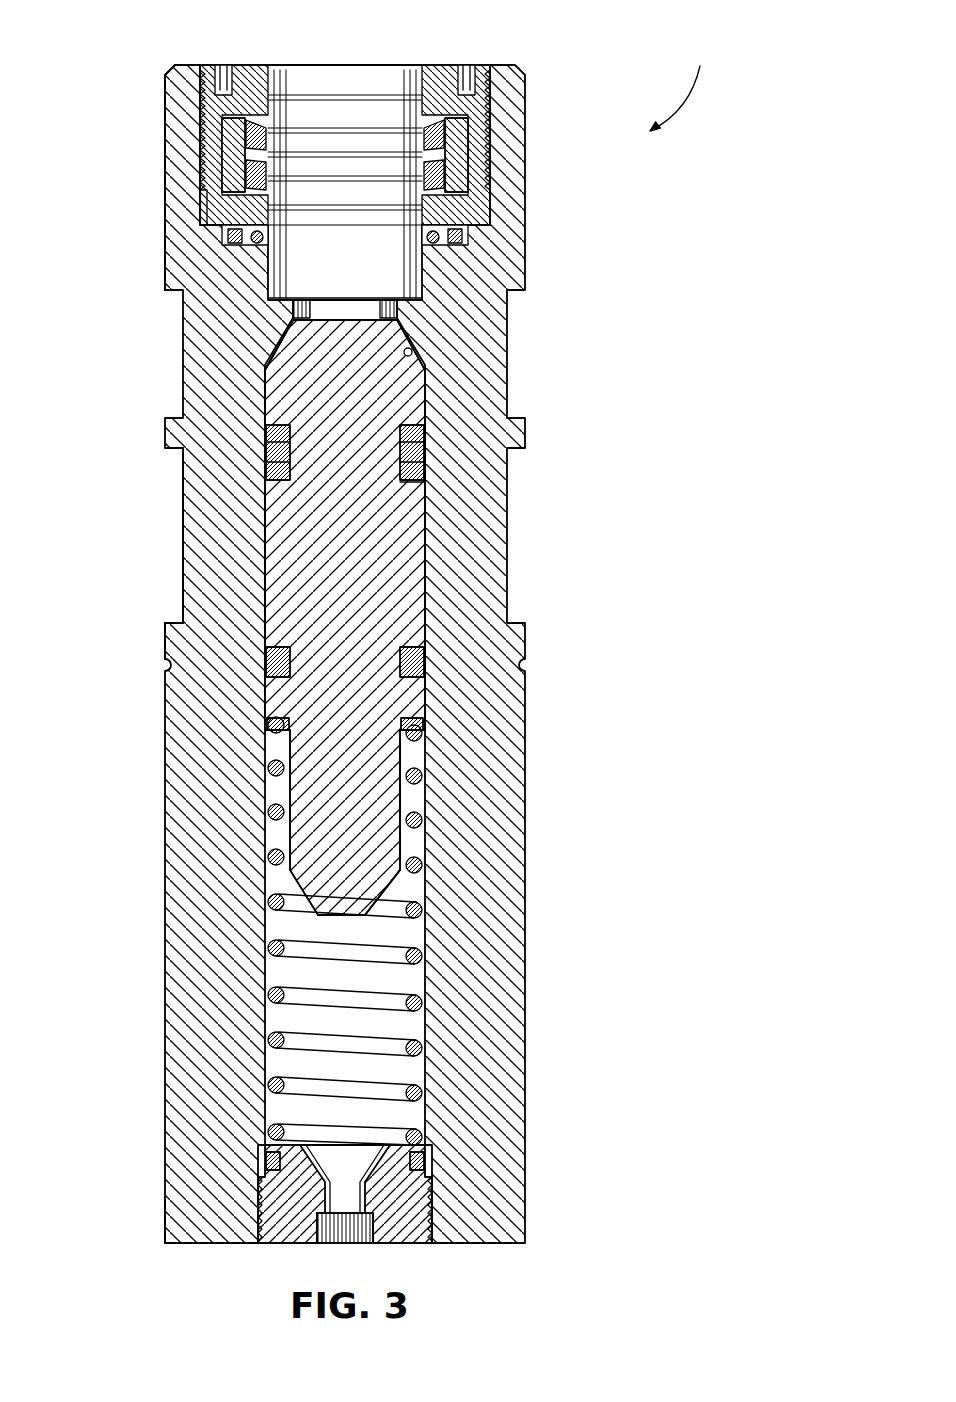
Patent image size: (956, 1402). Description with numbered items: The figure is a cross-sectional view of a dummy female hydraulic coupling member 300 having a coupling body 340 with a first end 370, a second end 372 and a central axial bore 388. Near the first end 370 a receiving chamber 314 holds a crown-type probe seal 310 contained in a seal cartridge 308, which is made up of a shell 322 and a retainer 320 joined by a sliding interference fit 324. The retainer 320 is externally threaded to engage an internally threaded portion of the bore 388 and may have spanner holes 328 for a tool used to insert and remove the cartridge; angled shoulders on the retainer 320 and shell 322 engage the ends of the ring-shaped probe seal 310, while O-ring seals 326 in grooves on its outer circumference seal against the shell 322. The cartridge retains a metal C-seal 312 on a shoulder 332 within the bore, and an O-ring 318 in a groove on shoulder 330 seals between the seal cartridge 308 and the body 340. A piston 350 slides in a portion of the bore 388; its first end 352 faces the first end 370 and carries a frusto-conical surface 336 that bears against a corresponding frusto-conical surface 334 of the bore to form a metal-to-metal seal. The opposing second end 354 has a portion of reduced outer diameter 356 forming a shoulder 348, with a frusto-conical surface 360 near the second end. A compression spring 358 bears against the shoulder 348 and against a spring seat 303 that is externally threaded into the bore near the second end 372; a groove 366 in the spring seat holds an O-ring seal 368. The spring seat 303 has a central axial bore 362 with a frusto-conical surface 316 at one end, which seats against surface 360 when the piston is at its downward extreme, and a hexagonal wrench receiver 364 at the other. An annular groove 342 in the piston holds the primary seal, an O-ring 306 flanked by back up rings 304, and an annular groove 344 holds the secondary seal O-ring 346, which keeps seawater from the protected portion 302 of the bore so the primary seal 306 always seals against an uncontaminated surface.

The coupling member 300 is at (687, 84).
The protected portion of bore 302 is at (430, 570).
The spring seat 303 is at (432, 1205).
The back up rings 304 is at (424, 440).
The O-ring 306 is at (266, 455).
The seal cartridge 308 is at (180, 107).
The crown-type probe seal 310 is at (460, 168).
The metal C-seal 312 is at (470, 280).
The receiving chamber 314 is at (325, 85).
The frusto-conical surface 316 is at (395, 1143).
The O-ring 318 is at (458, 235).
The retainer 320 is at (478, 105).
The shell 322 is at (218, 210).
The sliding interference fit 324 is at (222, 145).
The O-ring seals 326 is at (448, 128).
The spanner holes 328 is at (232, 68).
The shoulder 330 is at (236, 240).
The shoulder 332 is at (255, 243).
The frusto-conical surface 334 is at (415, 350).
The frusto-conical surface 336 is at (265, 360).
The coupling body 340 is at (195, 562).
The annular groove 342 is at (410, 484).
The annular groove 344 is at (410, 690).
The O-ring 346 is at (423, 660).
The shoulder 348 is at (268, 725).
The piston 350 is at (278, 520).
The first end of piston 352 is at (385, 312).
The second end of piston 354 is at (363, 918).
The portion of reduced outer diameter 356 is at (400, 840).
The compression spring 358 is at (425, 1013).
The frusto-conical surface 360 is at (290, 875).
The central axial bore 362 is at (330, 1226).
The hexagonal wrench receiver 364 is at (372, 1232).
The groove 366 is at (268, 1165).
The O-ring seal 368 is at (425, 1162).
The first end of coupling body 370 is at (200, 70).
The second end of coupling body 372 is at (225, 1243).
The central axial bore 388 is at (370, 279).